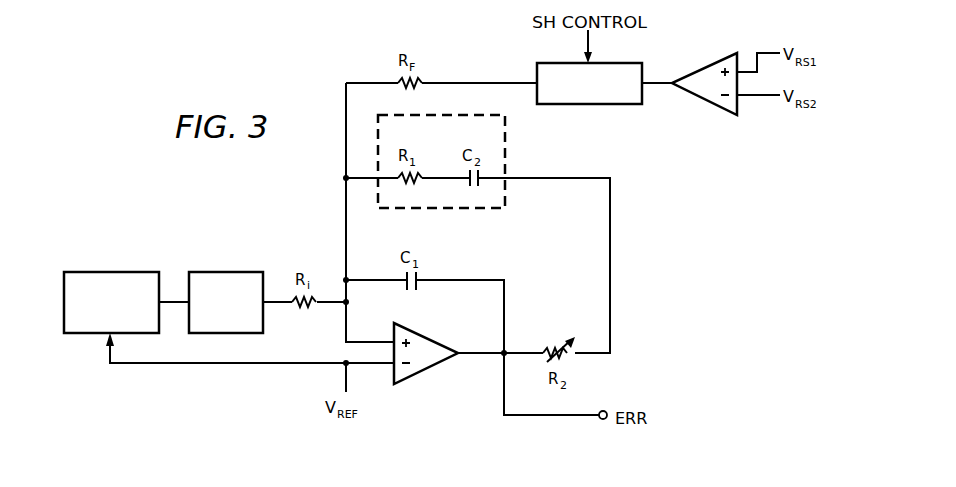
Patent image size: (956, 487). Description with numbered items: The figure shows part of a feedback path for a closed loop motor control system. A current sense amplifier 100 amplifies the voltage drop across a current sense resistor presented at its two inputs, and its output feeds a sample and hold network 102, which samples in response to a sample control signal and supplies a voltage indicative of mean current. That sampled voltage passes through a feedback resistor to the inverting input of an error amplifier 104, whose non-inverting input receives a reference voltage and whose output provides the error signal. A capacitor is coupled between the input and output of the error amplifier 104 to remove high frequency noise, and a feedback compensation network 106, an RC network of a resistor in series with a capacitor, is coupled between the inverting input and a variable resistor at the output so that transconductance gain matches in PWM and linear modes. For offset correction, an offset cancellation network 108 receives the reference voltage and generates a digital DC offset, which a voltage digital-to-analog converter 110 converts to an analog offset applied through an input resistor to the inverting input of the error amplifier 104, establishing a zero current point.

The current sense amplifier 100 is at (703, 101).
The sample and hold network 102 is at (595, 104).
The error amplifier 104 is at (425, 368).
The feedback compensation network 106 is at (458, 208).
The offset cancellation network 108 is at (105, 272).
The voltage digital-to-analog converter 110 is at (227, 272).